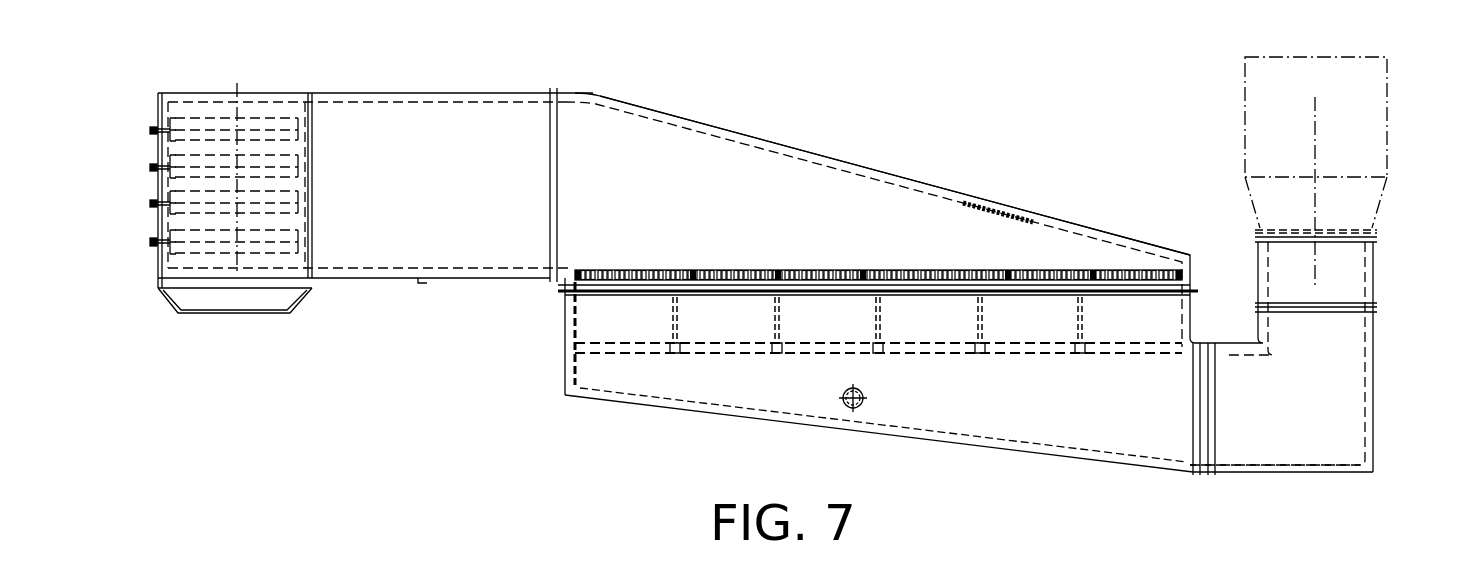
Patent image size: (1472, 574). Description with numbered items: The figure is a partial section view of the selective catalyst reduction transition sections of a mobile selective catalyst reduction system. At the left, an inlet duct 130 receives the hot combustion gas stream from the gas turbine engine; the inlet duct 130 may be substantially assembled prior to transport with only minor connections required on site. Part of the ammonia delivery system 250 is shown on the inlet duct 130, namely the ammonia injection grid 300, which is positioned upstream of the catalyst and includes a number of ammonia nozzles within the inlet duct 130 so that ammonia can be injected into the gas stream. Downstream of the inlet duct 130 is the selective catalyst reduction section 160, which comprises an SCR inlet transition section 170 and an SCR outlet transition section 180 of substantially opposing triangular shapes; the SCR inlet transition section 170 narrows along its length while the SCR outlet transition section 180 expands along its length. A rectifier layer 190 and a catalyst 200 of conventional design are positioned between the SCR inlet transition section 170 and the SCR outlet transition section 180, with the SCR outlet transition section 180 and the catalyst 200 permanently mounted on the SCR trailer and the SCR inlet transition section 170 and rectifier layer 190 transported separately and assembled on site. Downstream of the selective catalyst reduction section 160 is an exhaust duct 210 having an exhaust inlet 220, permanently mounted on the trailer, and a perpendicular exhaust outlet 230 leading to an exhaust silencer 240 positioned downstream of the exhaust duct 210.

The inlet duct 130 is at (397, 90).
The selective catalyst reduction section 160 is at (658, 108).
The SCR inlet transition section 170 is at (895, 175).
The SCR outlet transition section 180 is at (1082, 460).
The rectifier layer 190 is at (978, 270).
The catalyst 200 is at (965, 355).
The exhaust duct 210 is at (1380, 254).
The exhaust inlet 220 is at (1285, 472).
The exhaust outlet 230 is at (1372, 305).
The exhaust silencer 240 is at (1385, 118).
The ammonia delivery system 250 is at (150, 113).
The ammonia injection grid 300 is at (150, 245).